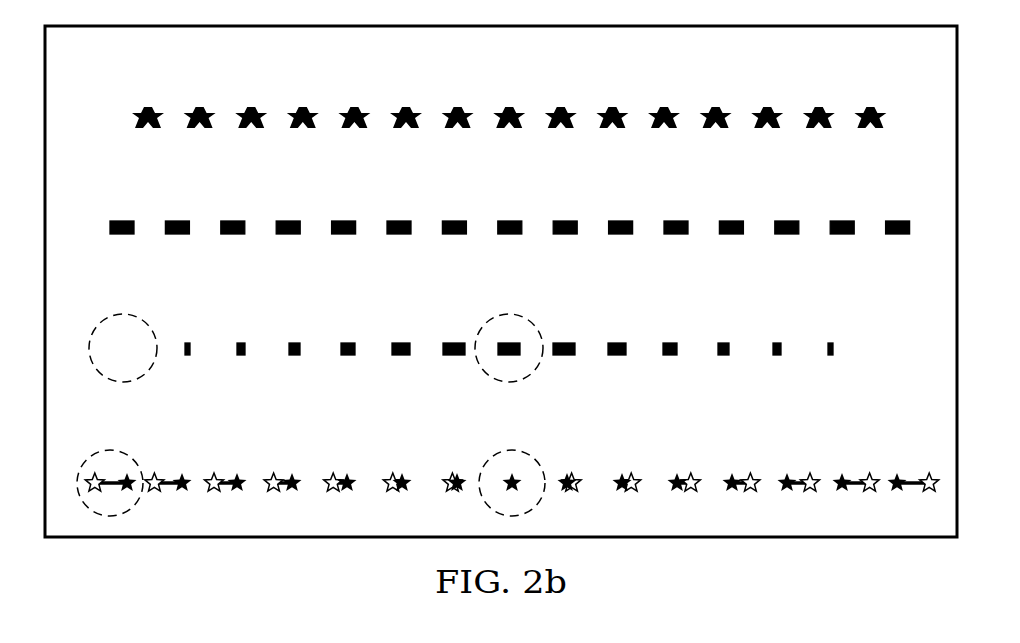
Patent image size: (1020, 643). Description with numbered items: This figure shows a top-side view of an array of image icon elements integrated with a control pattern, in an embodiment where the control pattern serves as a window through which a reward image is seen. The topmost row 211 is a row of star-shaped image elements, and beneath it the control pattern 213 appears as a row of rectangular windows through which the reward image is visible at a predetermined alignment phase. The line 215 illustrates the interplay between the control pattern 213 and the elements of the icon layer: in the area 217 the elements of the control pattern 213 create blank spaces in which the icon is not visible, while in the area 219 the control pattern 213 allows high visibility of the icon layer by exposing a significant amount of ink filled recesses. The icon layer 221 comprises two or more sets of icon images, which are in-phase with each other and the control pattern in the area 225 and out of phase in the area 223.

The first row of pattern elements (flat-topped stars) 211 is at (838, 97).
The control pattern 213 is at (838, 207).
The line 215 is at (838, 325).
The area 217 is at (118, 315).
The area 219 is at (528, 325).
The icon layer 221 is at (838, 461).
The area 223 is at (107, 450).
The area 225 is at (528, 458).